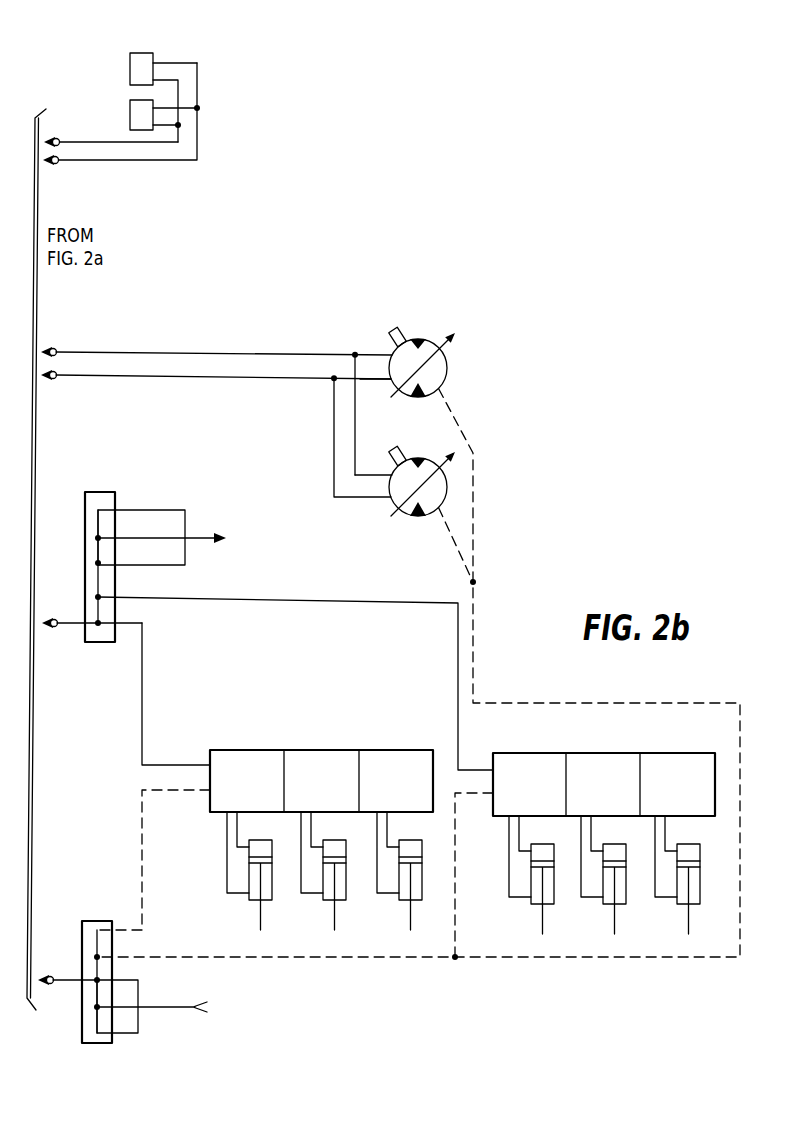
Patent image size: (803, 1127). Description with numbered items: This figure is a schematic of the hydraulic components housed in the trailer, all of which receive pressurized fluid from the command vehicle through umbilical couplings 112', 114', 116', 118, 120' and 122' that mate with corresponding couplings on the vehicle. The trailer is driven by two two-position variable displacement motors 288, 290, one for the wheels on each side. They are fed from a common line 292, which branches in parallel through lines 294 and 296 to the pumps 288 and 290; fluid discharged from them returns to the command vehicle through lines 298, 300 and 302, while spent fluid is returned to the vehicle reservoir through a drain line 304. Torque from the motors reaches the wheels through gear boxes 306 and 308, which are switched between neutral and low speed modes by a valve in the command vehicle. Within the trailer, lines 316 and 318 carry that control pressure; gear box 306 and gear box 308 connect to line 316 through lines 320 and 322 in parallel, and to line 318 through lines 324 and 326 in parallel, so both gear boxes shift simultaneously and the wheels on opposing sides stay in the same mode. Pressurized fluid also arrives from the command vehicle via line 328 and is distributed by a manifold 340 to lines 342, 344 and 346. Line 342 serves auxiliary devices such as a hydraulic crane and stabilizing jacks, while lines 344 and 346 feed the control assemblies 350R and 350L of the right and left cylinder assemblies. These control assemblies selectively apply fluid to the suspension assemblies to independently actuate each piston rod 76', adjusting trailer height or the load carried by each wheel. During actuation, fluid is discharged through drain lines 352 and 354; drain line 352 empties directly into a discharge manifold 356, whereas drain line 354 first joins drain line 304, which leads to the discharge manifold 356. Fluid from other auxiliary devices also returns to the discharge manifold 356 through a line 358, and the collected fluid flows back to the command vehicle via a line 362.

The gear box 306 is at (130, 80).
The gear box 308 is at (130, 103).
The line 324 is at (178, 62).
The line 320 is at (183, 92).
The line 326 is at (199, 107).
The line 318 is at (197, 130).
The line 322 is at (168, 125).
The line 316 is at (148, 143).
The coupling 112' is at (66, 114).
The coupling 114' is at (70, 180).
The coupling 116' is at (70, 333).
The coupling 118 is at (55, 380).
The common line 292 is at (188, 352).
The line 302 is at (268, 379).
The line 294 is at (370, 352).
The line 296 is at (353, 435).
The line 300 is at (333, 408).
The line 298 is at (372, 382).
The variable displacement motor 288 is at (448, 370).
The variable displacement motor 290 is at (448, 487).
The drain line 304 is at (474, 637).
The manifold 340 is at (118, 465).
The line 342 is at (193, 533).
The coupling 120' is at (61, 600).
The line 328 is at (75, 626).
The line 346 is at (245, 600).
The line 344 is at (140, 685).
The control assembly 350R is at (362, 745).
The control assembly 350L is at (642, 750).
The drain line 352 is at (142, 793).
The drain line 354 is at (456, 926).
The piston rod 76' is at (480, 881).
The discharge manifold 356 is at (110, 900).
The coupling 122' is at (54, 955).
The line 362 is at (73, 984).
The line 358 is at (150, 1004).